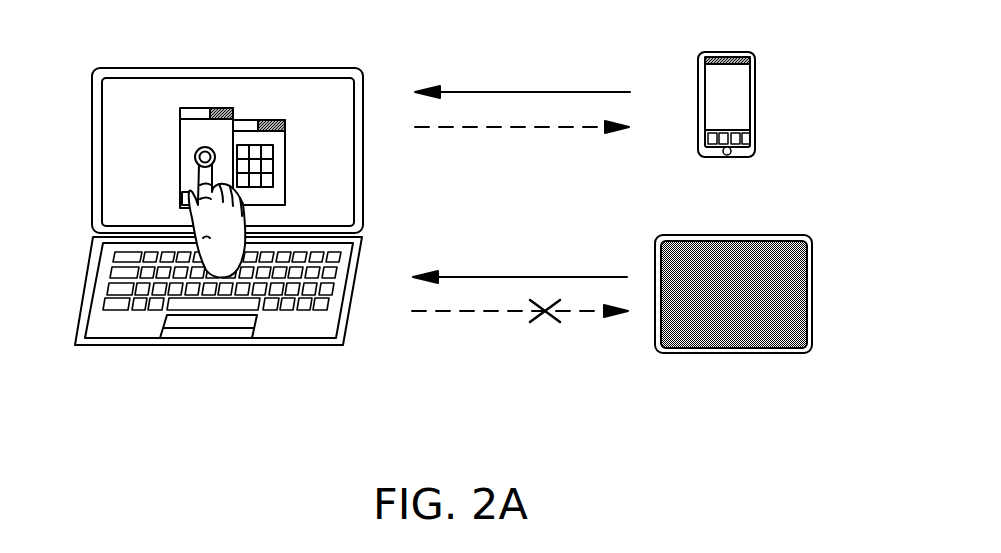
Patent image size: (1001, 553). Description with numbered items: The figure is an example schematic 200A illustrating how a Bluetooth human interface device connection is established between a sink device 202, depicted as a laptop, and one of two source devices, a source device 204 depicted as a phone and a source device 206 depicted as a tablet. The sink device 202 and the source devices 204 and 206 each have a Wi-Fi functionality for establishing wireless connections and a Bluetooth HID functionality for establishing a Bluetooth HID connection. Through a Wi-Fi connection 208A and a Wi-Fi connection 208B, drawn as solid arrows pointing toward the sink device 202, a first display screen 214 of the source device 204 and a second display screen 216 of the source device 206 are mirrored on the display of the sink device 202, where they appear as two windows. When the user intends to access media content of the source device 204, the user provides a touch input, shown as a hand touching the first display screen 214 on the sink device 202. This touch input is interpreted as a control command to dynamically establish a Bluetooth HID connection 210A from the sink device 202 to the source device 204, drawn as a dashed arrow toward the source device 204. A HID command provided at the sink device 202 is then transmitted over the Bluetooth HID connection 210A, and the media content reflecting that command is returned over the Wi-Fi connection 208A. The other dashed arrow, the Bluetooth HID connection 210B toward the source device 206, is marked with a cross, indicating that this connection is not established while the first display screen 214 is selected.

The example schematic 200A is at (463, 255).
The sink device 202 is at (197, 191).
The source device 204 is at (755, 97).
The source device 206 is at (812, 300).
The Wi-Fi connection 208A is at (506, 90).
The Bluetooth HID connection 210A is at (506, 130).
The Wi-Fi connection 208B is at (506, 275).
The Bluetooth HID connection 210B is at (506, 313).
The first display screen 214 is at (212, 108).
The second display screen 216 is at (254, 120).